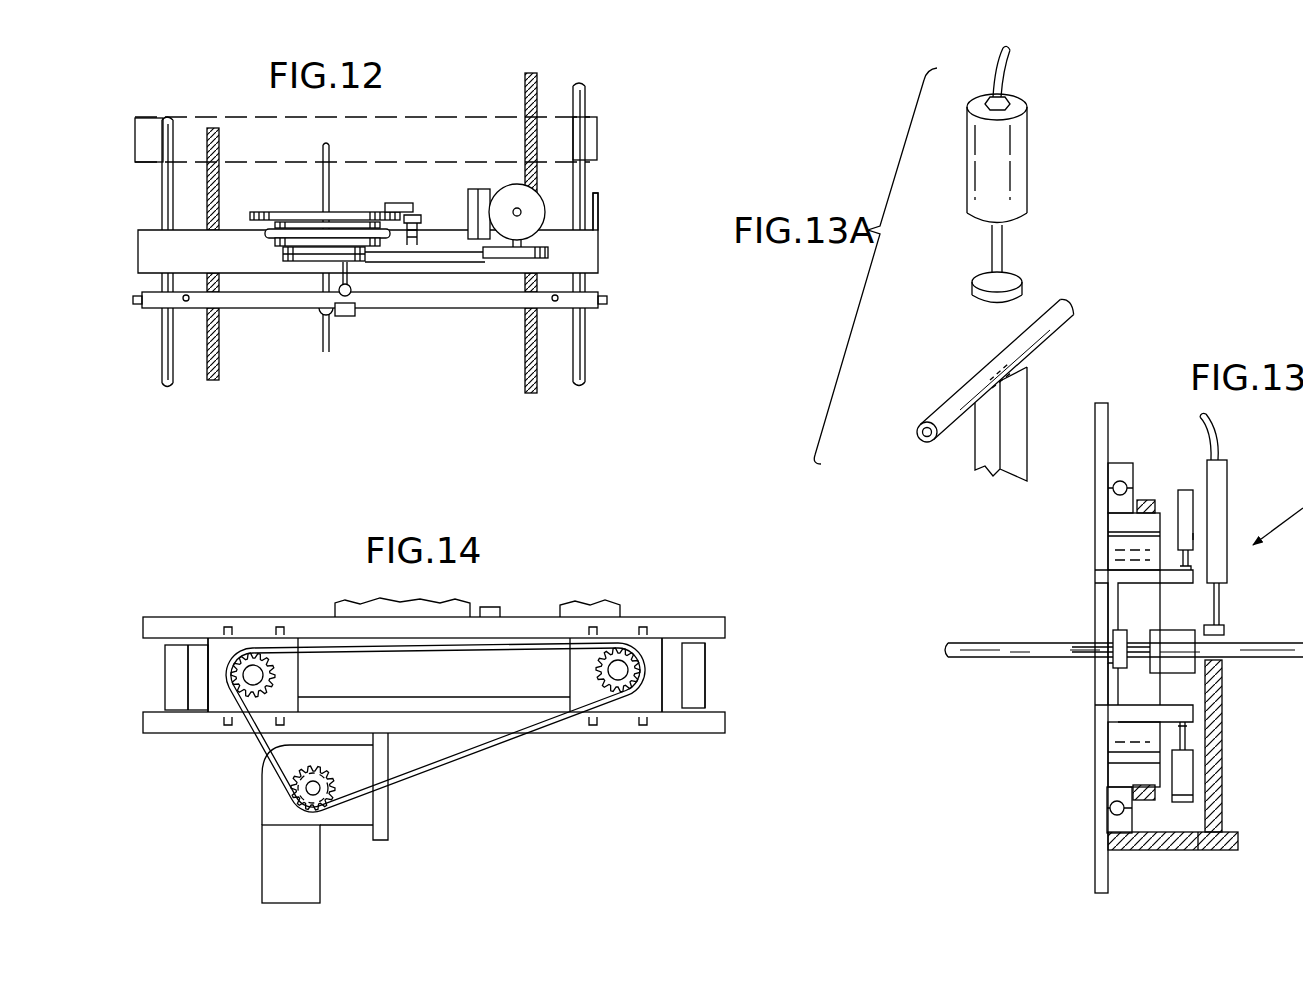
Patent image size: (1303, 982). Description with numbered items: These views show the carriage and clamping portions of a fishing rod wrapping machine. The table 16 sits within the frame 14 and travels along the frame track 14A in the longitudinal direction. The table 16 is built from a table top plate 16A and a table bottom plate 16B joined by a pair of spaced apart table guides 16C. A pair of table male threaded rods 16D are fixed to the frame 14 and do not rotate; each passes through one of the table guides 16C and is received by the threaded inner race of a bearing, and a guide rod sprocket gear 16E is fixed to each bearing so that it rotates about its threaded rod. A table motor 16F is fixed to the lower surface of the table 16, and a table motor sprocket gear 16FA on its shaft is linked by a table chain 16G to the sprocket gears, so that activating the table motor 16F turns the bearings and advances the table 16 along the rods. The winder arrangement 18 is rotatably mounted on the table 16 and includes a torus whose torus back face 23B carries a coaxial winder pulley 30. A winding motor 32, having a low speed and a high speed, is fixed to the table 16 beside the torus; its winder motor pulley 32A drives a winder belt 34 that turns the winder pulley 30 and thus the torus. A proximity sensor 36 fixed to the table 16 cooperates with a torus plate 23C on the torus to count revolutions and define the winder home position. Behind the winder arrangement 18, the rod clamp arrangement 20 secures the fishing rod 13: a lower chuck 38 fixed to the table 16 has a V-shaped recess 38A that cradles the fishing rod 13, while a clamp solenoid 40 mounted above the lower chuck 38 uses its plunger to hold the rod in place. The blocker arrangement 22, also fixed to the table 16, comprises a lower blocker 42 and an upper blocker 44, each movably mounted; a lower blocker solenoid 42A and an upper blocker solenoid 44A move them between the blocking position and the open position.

In FIG. 12, the fishing rod 13 is at (331, 168).
In FIG. 13A, the fishing rod 13 is at (950, 400).
In FIG. 13, the fishing rod 13 is at (1270, 643).
In FIG. 12, the frame 14 is at (157, 138).
In FIG. 14, the frame 14 is at (164, 680).
In FIG. 14, the frame track 14A is at (200, 680).
In FIG. 12, the table 16 is at (150, 228).
In FIG. 13, the table 16 is at (1162, 851).
In FIG. 14, the table 16 is at (212, 615).
In FIG. 12, the table top plate 16A is at (597, 215).
In FIG. 14, the table top plate 16A is at (152, 617).
In FIG. 14, the table bottom plate 16B is at (190, 735).
In FIG. 14, the table guides 16C is at (585, 688).
In FIG. 12, the table male threaded rods 16D is at (206, 368).
In FIG. 14, the table male threaded rods 16D is at (262, 671).
In FIG. 14, the guide rod sprocket gears 16E is at (262, 660).
In FIG. 14, the table motor 16F is at (282, 805).
In FIG. 14, the table motor sprocket gear 16FA is at (335, 778).
In FIG. 14, the table chain 16G is at (482, 768).
In FIG. 12, the winder arrangement 18 is at (299, 209).
In FIG. 13A, the rod clamp arrangement 20 is at (1029, 91).
In FIG. 13, the rod clamp arrangement 20 is at (1230, 461).
In FIG. 13, the blocker arrangement 22 is at (1175, 490).
In FIG. 12, the torus back face 23B is at (265, 233).
In FIG. 12, the torus plate 23C is at (400, 203).
In FIG. 12, the winder pulley 30 is at (357, 265).
In FIG. 12, the winding motor 32 is at (512, 195).
In FIG. 12, the winder motor pulley 32A is at (500, 262).
In FIG. 12, the winder belt 34 is at (405, 256).
In FIG. 12, the proximity sensor 36 is at (420, 220).
In FIG. 13A, the lower chuck 38 is at (975, 450).
In FIG. 13, the lower chuck 38 is at (1224, 730).
In FIG. 13A, the V-shaped recess 38A is at (1015, 366).
In FIG. 13A, the clamp solenoid 40 is at (1027, 172).
In FIG. 13, the clamp solenoid 40 is at (1228, 505).
In FIG. 13, the lower blocker 42 is at (1105, 692).
In FIG. 13, the lower blocker solenoid 42A is at (1190, 775).
In FIG. 13, the upper blocker 44 is at (1105, 606).
In FIG. 13, the upper blocker solenoid 44A is at (1193, 535).